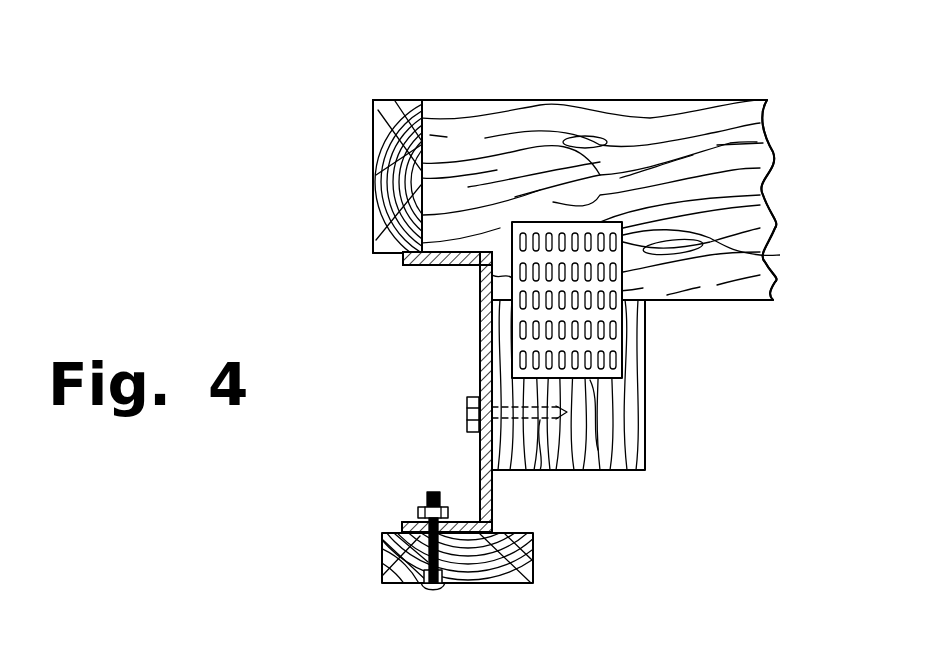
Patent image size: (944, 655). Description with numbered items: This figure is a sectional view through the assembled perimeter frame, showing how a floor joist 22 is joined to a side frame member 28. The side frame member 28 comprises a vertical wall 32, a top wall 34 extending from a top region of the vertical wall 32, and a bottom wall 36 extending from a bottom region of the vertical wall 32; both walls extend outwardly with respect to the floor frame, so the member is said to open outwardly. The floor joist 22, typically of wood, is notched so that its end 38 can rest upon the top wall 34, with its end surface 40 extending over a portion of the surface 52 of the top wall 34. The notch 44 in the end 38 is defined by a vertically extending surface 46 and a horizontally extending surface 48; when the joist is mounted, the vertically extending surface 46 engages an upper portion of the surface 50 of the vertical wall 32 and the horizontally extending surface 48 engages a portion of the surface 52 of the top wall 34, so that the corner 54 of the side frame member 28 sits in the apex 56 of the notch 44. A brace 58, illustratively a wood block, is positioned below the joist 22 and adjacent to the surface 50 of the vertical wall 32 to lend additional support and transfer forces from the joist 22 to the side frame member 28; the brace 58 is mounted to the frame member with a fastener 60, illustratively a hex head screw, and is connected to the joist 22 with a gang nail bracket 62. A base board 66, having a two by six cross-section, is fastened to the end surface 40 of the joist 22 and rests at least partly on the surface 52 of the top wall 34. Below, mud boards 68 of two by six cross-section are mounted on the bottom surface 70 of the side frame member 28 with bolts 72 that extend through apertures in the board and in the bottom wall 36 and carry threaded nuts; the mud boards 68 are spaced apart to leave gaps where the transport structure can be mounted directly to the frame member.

The floor joist 22 is at (717, 85).
The side frame member 28 is at (464, 467).
The vertical wall 32 is at (480, 330).
The top wall 34 is at (430, 268).
The bottom wall 36 is at (402, 527).
The end 38 is at (302, 82).
The end surface 40 is at (412, 110).
The notch 44 is at (477, 251).
The vertically extending surface 46 is at (480, 290).
The horizontally extending surface 48 is at (405, 268).
The surface 50 is at (480, 385).
The surface 52 is at (402, 258).
The corner 54 is at (517, 253).
The apex 56 is at (478, 268).
The brace 58 is at (633, 408).
The fastener 60 is at (467, 412).
The gang nail bracket 62 is at (765, 255).
The base board 66 is at (385, 178).
The mud boards 68 is at (533, 567).
The bottom surface 70 is at (478, 533).
The bolts 72 is at (437, 588).